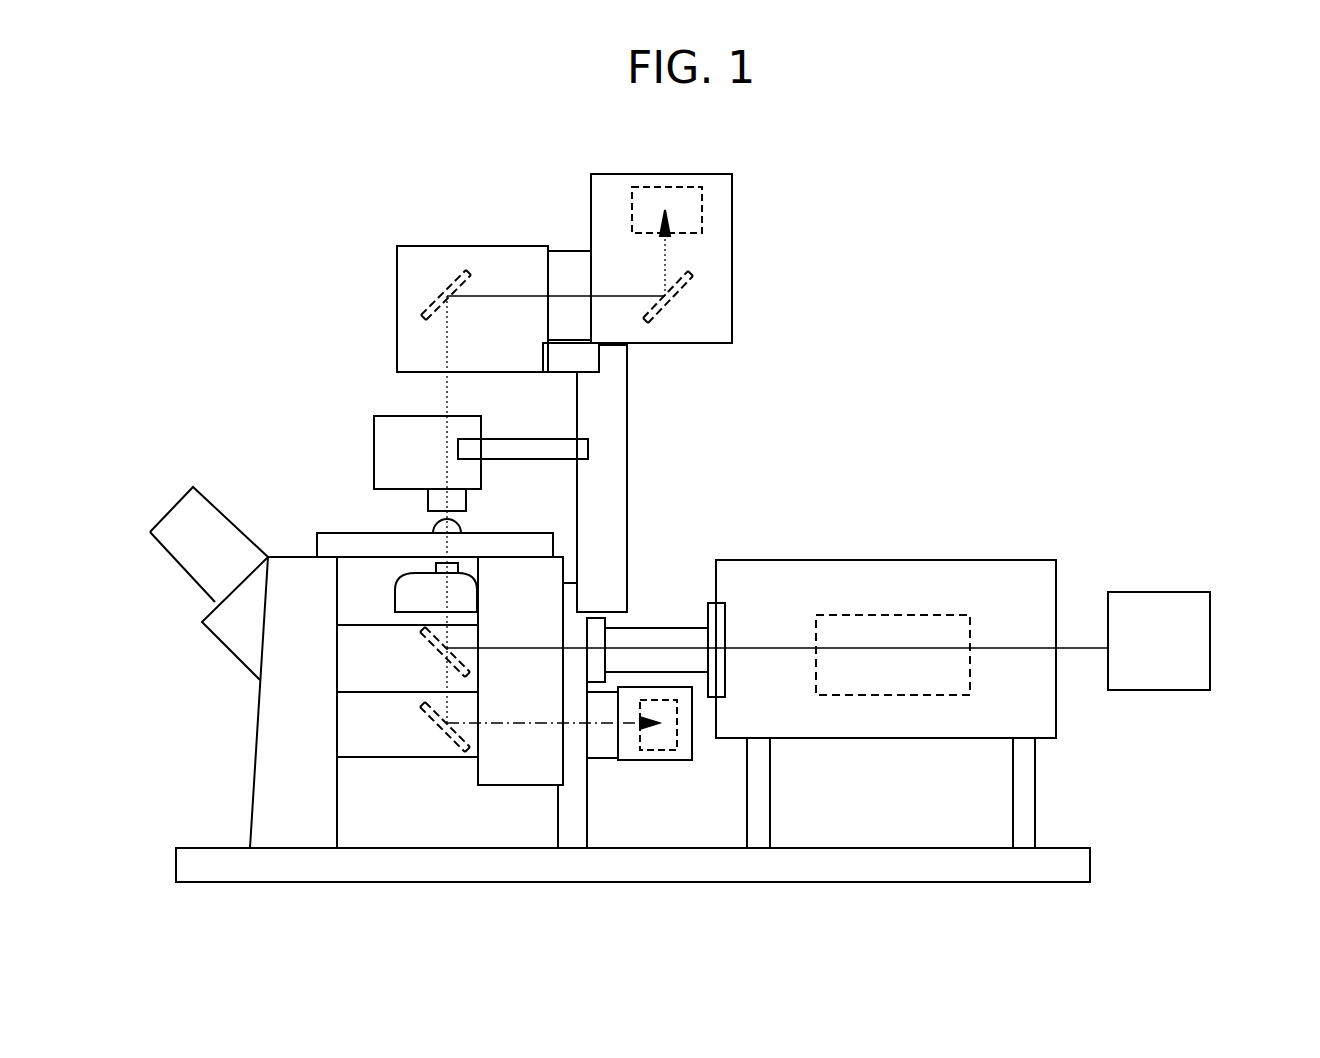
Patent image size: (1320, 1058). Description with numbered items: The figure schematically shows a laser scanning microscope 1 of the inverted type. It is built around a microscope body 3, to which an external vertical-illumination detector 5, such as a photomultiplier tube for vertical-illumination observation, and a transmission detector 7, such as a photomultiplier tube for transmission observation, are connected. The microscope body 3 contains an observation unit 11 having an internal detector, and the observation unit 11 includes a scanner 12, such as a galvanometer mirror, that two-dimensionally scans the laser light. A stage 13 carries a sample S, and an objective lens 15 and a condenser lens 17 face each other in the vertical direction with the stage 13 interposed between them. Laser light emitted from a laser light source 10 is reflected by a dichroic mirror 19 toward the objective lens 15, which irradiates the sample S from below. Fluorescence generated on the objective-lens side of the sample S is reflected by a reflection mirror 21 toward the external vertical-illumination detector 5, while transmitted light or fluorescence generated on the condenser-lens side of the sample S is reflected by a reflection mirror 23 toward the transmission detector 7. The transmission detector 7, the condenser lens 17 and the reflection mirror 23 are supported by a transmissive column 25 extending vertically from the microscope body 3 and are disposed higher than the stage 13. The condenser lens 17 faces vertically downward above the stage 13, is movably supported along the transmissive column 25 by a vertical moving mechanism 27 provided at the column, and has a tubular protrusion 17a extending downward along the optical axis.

The laser scanning microscope 1 is at (255, 136).
The microscope body 3 is at (266, 366).
The external vertical-illumination detector 5 is at (658, 762).
The transmission detector 7 is at (732, 267).
The laser light source 10 is at (1212, 642).
The observation unit 11 is at (901, 548).
The scanner 12 is at (972, 678).
The stage 13 is at (332, 533).
The objective lens 15 is at (459, 568).
The condenser lens 17 is at (373, 433).
The tubular protrusion 17a is at (428, 500).
The dichroic mirror 19 is at (432, 644).
The reflection mirror 21 is at (448, 738).
The reflection mirror 23 is at (436, 298).
The transmissive column 25 is at (628, 431).
The vertical moving mechanism 27 is at (541, 460).
The sample S is at (456, 533).